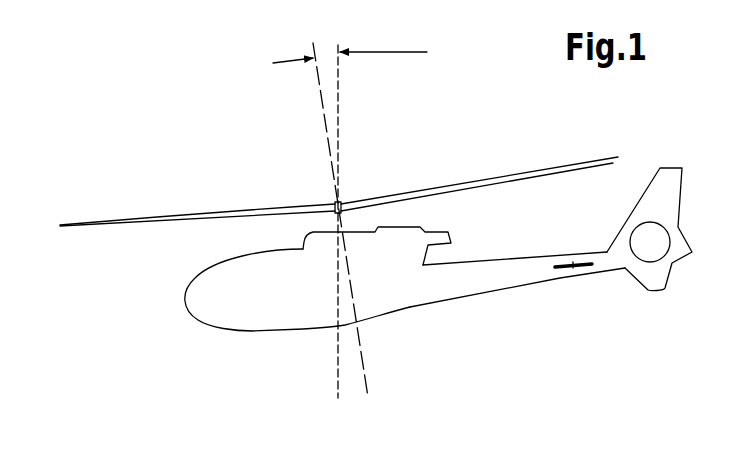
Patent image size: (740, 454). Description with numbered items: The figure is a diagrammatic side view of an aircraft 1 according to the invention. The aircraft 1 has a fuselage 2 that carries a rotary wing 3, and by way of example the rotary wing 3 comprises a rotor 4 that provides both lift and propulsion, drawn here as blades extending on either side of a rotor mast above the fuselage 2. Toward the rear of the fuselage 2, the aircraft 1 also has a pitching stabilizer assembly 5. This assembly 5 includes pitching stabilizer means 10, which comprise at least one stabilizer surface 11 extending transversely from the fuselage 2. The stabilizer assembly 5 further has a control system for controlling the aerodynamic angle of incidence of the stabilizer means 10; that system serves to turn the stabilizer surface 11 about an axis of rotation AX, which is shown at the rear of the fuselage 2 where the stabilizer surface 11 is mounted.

The aircraft 1 is at (166, 312).
The fuselage 2 is at (248, 332).
The rotary wing 3 is at (78, 204).
The rotor 4 is at (161, 216).
The pitching stabilizer assembly 5 is at (483, 283).
The pitching stabilizer means 10 is at (560, 294).
The stabilizer surface 11 is at (582, 269).
The axis of rotation AX is at (573, 263).